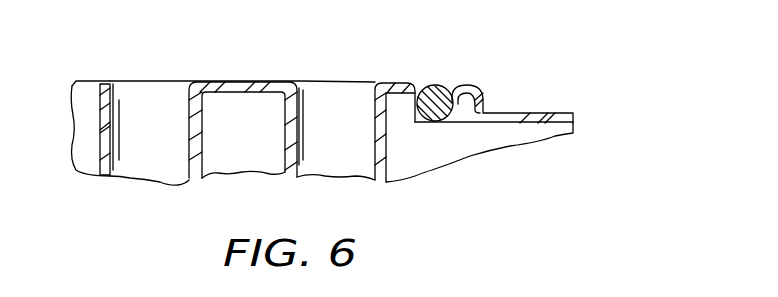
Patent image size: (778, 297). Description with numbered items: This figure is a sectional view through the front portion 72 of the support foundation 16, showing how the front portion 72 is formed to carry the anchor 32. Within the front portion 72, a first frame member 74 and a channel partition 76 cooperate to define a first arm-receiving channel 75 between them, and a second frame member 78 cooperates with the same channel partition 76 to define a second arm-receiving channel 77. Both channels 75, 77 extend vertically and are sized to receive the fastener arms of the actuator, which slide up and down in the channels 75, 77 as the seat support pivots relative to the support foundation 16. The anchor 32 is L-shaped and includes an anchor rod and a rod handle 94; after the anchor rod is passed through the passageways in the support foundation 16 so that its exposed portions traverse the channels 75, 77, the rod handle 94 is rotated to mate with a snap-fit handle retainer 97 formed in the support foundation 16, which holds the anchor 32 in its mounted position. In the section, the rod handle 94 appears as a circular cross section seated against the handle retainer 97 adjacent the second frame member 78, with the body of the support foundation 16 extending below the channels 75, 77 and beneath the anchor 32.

The support foundation 16 is at (429, 55).
The anchor 32 is at (437, 136).
The front portion 72 is at (134, 62).
The first frame member 74 is at (84, 81).
The first arm-receiving channel 75 is at (151, 110).
The channel partition 76 is at (247, 81).
The second arm-receiving channel 77 is at (333, 106).
The second frame member 78 is at (396, 82).
The rod handle 94 is at (443, 88).
The handle retainer 97 is at (483, 88).